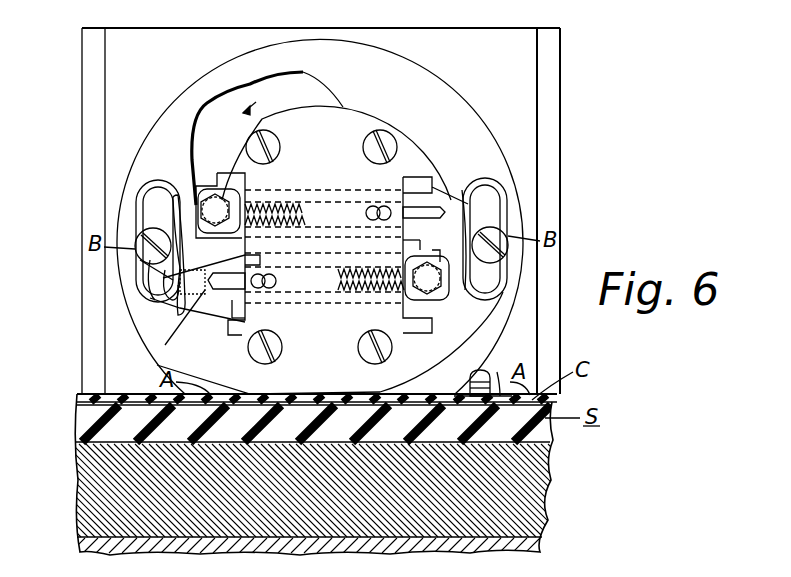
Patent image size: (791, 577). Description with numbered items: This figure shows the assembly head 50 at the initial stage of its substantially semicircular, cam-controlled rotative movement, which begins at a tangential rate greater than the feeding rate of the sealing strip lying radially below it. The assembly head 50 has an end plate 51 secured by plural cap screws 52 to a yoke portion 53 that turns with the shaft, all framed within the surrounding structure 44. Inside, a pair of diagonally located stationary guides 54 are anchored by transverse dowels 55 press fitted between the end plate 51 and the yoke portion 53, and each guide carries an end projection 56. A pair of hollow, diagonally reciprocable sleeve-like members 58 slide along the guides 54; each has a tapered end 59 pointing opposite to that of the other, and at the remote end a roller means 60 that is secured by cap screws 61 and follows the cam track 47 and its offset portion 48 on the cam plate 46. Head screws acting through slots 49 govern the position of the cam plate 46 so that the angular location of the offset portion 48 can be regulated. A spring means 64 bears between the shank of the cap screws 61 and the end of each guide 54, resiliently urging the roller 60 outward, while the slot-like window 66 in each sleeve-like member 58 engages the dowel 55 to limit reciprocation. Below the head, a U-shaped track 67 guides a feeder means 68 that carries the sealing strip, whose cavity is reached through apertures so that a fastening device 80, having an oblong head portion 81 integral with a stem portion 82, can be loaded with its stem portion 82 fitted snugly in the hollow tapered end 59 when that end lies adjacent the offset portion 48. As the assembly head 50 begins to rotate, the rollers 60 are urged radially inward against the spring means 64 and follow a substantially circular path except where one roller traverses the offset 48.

The mounting frame 44 is at (82, 70).
The cam plate 46 is at (441, 84).
The cam track 47 is at (212, 305).
The offset portion of the cam track 48 is at (230, 90).
The slots 49 is at (166, 185).
The assembly head 50 is at (248, 366).
The end plate 51 is at (349, 108).
The cap screws 52 is at (385, 138).
The yoke portion 53 is at (425, 176).
The stationary guides 54 is at (323, 202).
The dowels 55 is at (378, 205).
The end projection 56 is at (232, 300).
The sleeve-like members 58 is at (210, 172).
The tapered end 59 is at (456, 190).
The roller means 60 is at (200, 208).
The cap screws 61 is at (222, 183).
The spring means 64 is at (276, 205).
The slot-like window 66 is at (440, 214).
The U-shaped track 67 is at (528, 547).
The feeder means 68 is at (545, 472).
The fastening device 80 is at (497, 372).
The head portion 81 is at (520, 396).
The stem portion 82 is at (478, 374).